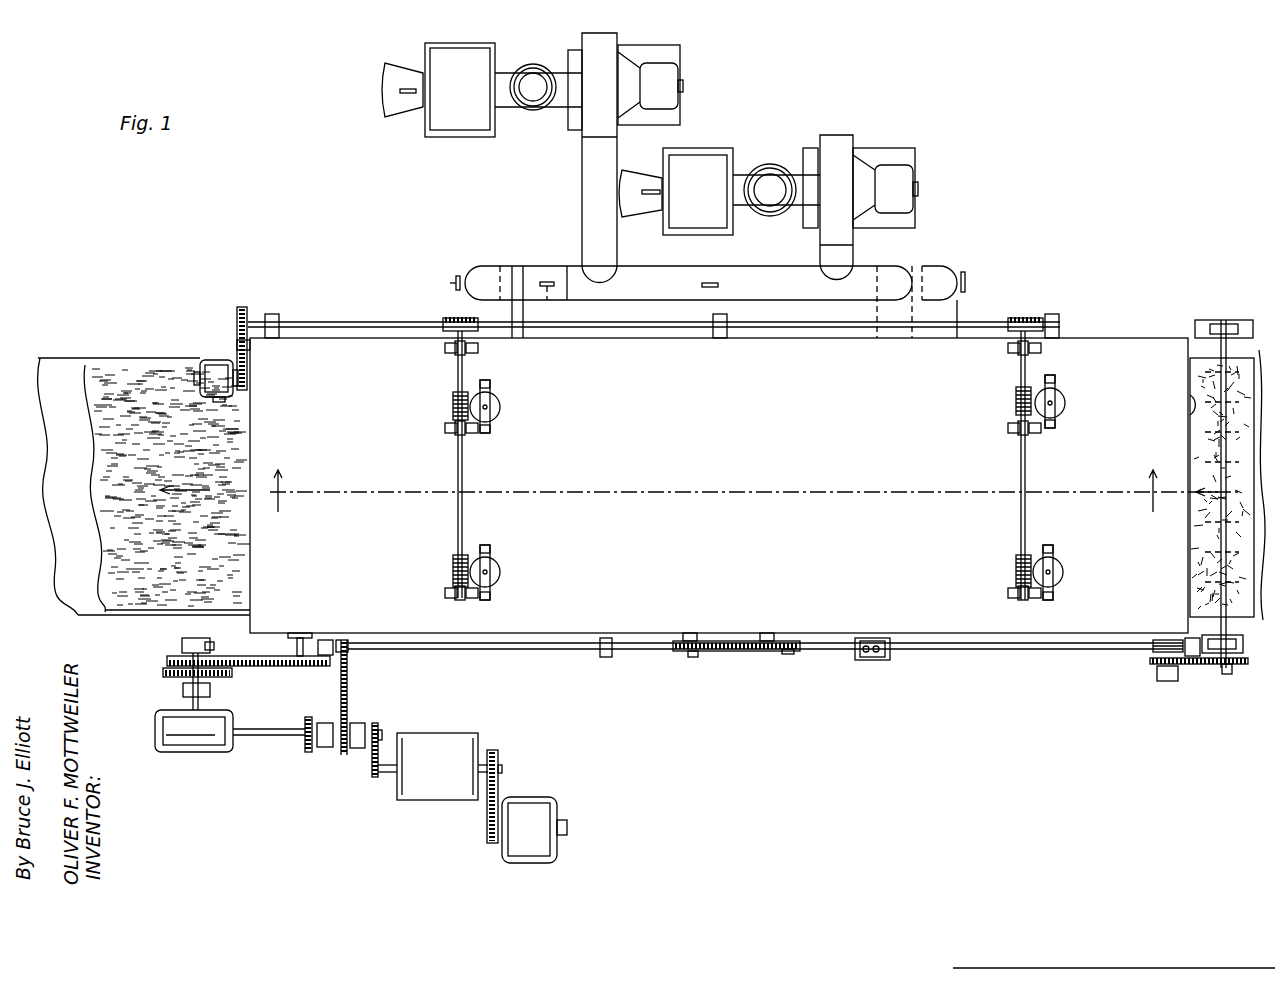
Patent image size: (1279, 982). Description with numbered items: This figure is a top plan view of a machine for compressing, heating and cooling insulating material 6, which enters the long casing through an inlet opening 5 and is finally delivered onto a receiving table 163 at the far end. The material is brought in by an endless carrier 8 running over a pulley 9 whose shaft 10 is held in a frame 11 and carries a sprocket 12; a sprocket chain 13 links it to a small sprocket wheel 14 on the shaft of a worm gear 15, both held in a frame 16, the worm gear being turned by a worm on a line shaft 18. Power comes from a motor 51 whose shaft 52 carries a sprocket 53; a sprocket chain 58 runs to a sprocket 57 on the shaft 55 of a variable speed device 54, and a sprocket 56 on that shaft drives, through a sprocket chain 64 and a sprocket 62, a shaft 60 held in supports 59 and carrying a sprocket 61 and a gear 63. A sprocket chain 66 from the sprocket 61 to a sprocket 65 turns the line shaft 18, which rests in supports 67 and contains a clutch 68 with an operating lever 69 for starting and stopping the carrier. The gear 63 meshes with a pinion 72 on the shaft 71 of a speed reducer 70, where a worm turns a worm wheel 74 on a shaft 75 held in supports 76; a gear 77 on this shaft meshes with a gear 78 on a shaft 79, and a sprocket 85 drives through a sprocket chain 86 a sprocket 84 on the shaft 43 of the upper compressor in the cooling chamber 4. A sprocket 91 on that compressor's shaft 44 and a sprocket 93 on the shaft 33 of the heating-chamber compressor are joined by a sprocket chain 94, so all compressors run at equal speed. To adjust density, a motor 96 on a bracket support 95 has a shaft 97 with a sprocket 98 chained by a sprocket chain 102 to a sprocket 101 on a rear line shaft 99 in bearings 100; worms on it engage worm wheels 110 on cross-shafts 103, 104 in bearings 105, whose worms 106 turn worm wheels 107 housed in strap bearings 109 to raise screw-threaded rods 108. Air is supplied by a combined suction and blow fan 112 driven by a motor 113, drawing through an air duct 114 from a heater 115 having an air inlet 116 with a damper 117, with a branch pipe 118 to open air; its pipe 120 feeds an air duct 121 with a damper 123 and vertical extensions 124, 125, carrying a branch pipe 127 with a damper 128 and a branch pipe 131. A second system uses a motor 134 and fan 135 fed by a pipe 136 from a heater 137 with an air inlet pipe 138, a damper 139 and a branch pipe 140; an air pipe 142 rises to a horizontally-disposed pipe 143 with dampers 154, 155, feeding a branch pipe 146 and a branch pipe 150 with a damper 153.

The cooling chamber 4 is at (746, 491).
The inlet opening 5 is at (1190, 395).
The insulating material 6 is at (1215, 380).
The endless carrier 8 is at (1259, 350).
The pulley 9 is at (1195, 325).
The shaft 10 is at (1222, 320).
The frame 11 is at (1217, 335).
The sprocket 12 is at (1230, 674).
The sprocket chain 13 is at (1195, 665).
The small sprocket wheel 14 is at (1160, 673).
The worm gear 15 is at (1155, 652).
The frame 16 is at (1166, 681).
The line shaft 18 is at (1022, 650).
The shaft 33 is at (772, 652).
The shaft 43 is at (297, 645).
The shaft 44 is at (692, 657).
The motor 51 is at (535, 808).
The shaft 52 is at (567, 826).
The sprocket 53 is at (487, 825).
The variable speed device 54 is at (425, 795).
The shaft 55 is at (388, 773).
The sprocket 56 is at (378, 772).
The sprocket 57 is at (500, 764).
The sprocket chain 58 is at (498, 790).
The supports 59 is at (322, 748).
The shaft 60 is at (375, 723).
The sprocket 61 is at (342, 720).
The sprocket 62 is at (383, 732).
The gear 63 is at (305, 740).
The sprocket chain 64 is at (357, 748).
The sprocket 65 is at (349, 648).
The sprocket chain 66 is at (348, 682).
The supports 67 is at (325, 640).
The clutch 68 is at (862, 660).
The operating lever 69 is at (866, 645).
The speed reducer 70 is at (205, 750).
The shaft 71 is at (252, 736).
The pinion 72 is at (305, 725).
The worm wheel 74 is at (172, 740).
The shaft 75 is at (193, 703).
The supports 76 is at (190, 640).
The gear 77 is at (165, 672).
The gear 78 is at (230, 676).
The shaft 79 is at (212, 644).
The sprocket 84 is at (299, 658).
The sprocket 85 is at (168, 656).
The sprocket chain 86 is at (255, 666).
The sprocket 91 is at (685, 648).
The sprocket 93 is at (790, 654).
The sprocket chain 94 is at (732, 652).
The bracket support 95 is at (232, 372).
The motor 96 is at (213, 378).
The shaft 97 is at (194, 380).
The sprocket 98 is at (225, 400).
The line shaft 99 is at (350, 322).
The bearings 100 is at (275, 316).
The sprocket 101 is at (242, 307).
The sprocket chain 102 is at (250, 345).
The cross-shaft 103 is at (458, 470).
The cross-shaft 104 is at (1021, 470).
The bearings 105 is at (448, 352).
The worms 106 is at (453, 405).
The worm wheels 107 is at (498, 402).
The screw-threaded rod 108 is at (492, 410).
The strap bearings 109 is at (490, 383).
The worm wheel 110 is at (445, 331).
The combined suction and blow fan 112 is at (842, 140).
The motor 113 is at (895, 180).
The air duct 114 is at (740, 208).
The heater 115 is at (698, 150).
The air inlet 116 is at (636, 175).
The damper 117 is at (650, 195).
The branch pipe 118 is at (775, 215).
The pipe 120 is at (853, 247).
The air duct 121 is at (915, 268).
The damper 123 is at (710, 282).
The vertical extension 124 is at (955, 268).
The vertical extension 125 is at (503, 275).
The branch pipe 127 is at (948, 305).
The damper 128 is at (965, 282).
The branch pipe 131 is at (540, 312).
The motor 134 is at (670, 75).
The fan 135 is at (612, 50).
The pipe 136 is at (568, 68).
The heater 137 is at (460, 58).
The air inlet pipe 138 is at (400, 110).
The damper 139 is at (407, 88).
The branch pipe 140 is at (533, 110).
The air pipe 142 is at (582, 210).
The horizontally-disposed pipe 143 is at (760, 295).
The branch pipe 146 is at (878, 312).
The branch pipe 150 is at (470, 300).
The damper 153 is at (456, 282).
The damper 154 is at (718, 285).
The damper 155 is at (548, 280).
The receiving table 163 is at (75, 365).